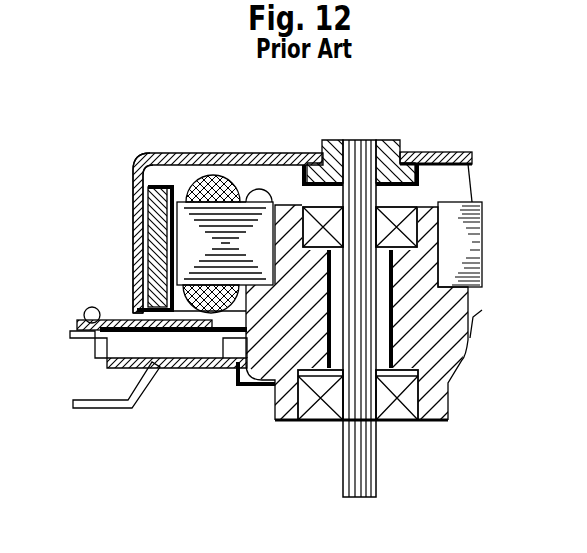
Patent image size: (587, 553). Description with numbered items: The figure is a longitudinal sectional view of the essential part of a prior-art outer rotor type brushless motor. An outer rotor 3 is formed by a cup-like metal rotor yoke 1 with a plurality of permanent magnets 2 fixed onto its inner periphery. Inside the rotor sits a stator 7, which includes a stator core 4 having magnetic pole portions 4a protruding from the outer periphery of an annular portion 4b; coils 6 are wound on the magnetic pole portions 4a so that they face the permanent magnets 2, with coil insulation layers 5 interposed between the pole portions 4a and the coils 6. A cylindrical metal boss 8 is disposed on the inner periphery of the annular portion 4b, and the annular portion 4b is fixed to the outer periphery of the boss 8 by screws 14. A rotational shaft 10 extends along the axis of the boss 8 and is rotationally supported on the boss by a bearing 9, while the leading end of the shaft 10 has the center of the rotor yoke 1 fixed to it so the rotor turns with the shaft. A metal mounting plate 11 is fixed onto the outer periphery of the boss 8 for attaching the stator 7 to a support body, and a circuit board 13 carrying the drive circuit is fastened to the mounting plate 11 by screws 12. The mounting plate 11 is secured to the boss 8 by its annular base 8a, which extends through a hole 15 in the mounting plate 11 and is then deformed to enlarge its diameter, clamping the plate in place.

The rotor yoke 1 is at (134, 206).
The permanent magnets 2 is at (148, 233).
The outer rotor 3 is at (141, 151).
The stator core 4 is at (196, 245).
The magnetic pole portions 4a is at (188, 204).
The annular portion 4b is at (280, 220).
The coil insulation layers 5 is at (190, 206).
The coils 6 is at (214, 180).
The stator 7 is at (246, 180).
The boss 8 is at (248, 385).
The annular base 8a is at (233, 373).
The bearing 9 is at (400, 218).
The rotational shaft 10 is at (360, 160).
The mounting plate 11 is at (107, 407).
The screws 12 is at (86, 308).
The circuit board 13 is at (137, 338).
The screws 14 is at (258, 192).
The hole 15 is at (250, 368).